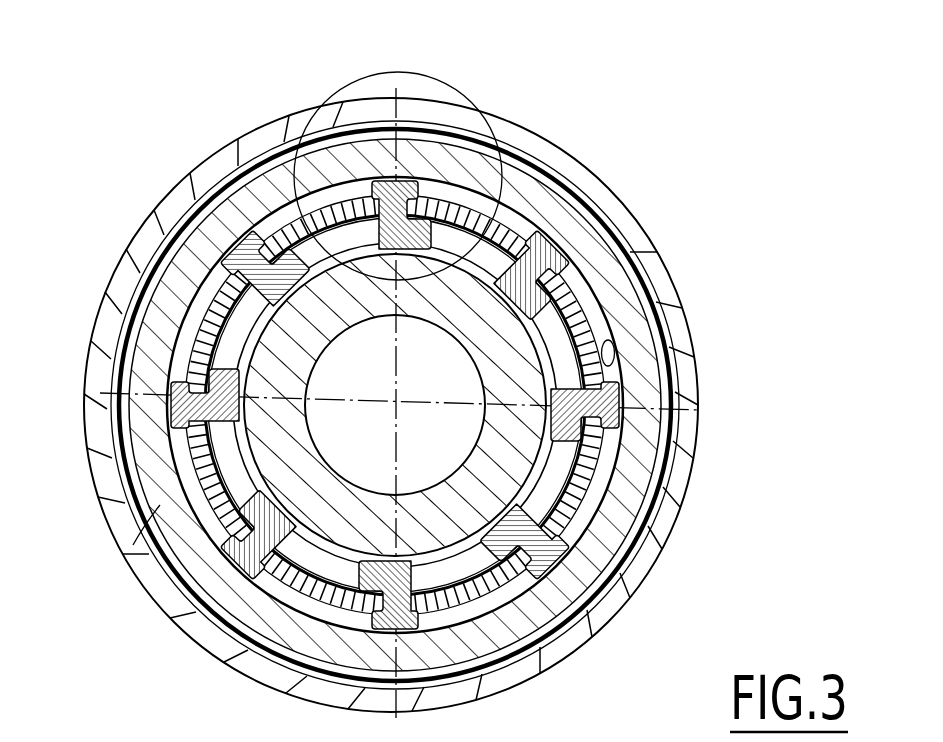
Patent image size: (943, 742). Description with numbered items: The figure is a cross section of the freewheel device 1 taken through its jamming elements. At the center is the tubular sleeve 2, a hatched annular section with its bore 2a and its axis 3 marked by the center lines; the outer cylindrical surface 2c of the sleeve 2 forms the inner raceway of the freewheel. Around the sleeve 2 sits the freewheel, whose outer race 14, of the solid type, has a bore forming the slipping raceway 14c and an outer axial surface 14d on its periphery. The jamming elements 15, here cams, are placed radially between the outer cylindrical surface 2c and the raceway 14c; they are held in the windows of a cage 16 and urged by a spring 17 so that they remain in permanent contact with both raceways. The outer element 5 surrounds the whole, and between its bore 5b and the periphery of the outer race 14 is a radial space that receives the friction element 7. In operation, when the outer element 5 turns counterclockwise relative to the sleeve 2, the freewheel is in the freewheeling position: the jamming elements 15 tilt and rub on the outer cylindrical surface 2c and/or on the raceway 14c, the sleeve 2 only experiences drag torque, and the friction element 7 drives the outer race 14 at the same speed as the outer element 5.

The freewheel device 1 is at (180, 130).
The tubular sleeve 2 is at (122, 503).
The bore 2a is at (318, 447).
The outer cylindrical surface 2c is at (150, 552).
The axis 3 is at (396, 398).
The outer element 5 is at (550, 152).
The bore of the outer element 5b is at (593, 197).
The friction element 7 is at (627, 272).
The outer race 14 is at (618, 325).
The slipping raceway 14c is at (616, 364).
The outer axial surface 14d is at (623, 410).
The jamming elements 15 is at (563, 570).
The cage 16 is at (587, 463).
The spring 17 is at (567, 495).